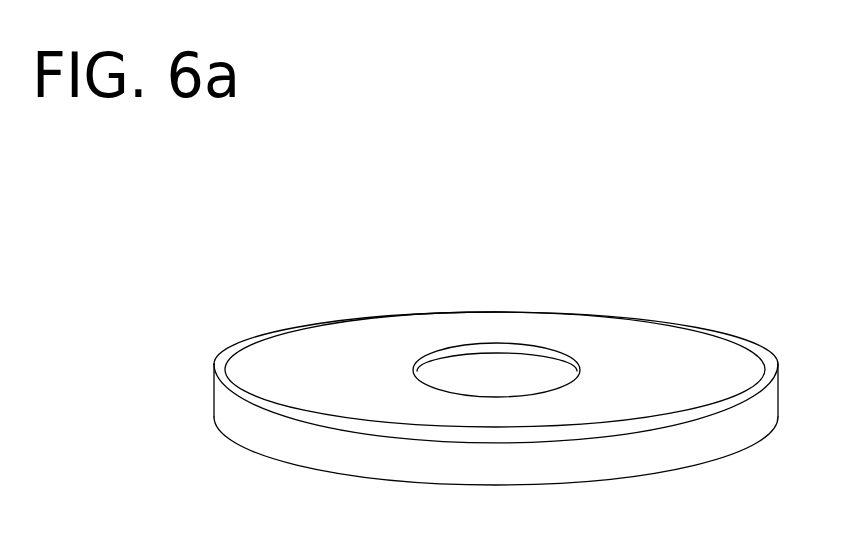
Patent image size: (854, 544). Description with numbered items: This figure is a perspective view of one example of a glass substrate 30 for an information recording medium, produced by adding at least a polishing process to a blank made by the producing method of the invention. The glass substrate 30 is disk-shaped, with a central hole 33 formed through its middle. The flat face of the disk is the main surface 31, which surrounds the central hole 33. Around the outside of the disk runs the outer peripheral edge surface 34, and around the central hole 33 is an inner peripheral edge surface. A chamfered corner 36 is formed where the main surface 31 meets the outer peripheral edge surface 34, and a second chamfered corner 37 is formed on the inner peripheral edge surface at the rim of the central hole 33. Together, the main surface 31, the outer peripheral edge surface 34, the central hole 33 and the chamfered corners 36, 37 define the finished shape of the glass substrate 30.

The glass substrate for an information recording medium 30 is at (259, 283).
The main surface 31 is at (350, 333).
The central hole 33 is at (518, 365).
The outer peripheral edge surface 34 is at (215, 400).
The chamfered corner 36 is at (779, 377).
The chamfered corner 37 is at (444, 355).